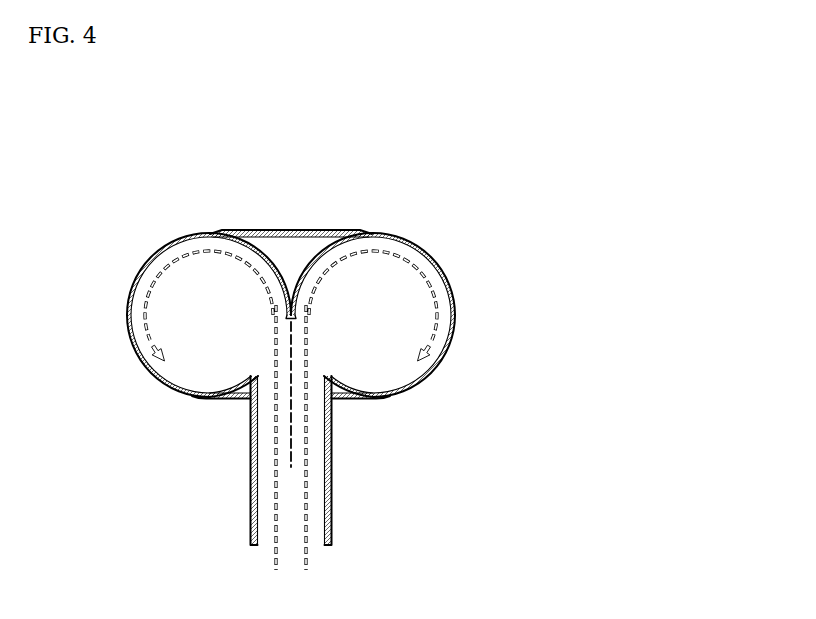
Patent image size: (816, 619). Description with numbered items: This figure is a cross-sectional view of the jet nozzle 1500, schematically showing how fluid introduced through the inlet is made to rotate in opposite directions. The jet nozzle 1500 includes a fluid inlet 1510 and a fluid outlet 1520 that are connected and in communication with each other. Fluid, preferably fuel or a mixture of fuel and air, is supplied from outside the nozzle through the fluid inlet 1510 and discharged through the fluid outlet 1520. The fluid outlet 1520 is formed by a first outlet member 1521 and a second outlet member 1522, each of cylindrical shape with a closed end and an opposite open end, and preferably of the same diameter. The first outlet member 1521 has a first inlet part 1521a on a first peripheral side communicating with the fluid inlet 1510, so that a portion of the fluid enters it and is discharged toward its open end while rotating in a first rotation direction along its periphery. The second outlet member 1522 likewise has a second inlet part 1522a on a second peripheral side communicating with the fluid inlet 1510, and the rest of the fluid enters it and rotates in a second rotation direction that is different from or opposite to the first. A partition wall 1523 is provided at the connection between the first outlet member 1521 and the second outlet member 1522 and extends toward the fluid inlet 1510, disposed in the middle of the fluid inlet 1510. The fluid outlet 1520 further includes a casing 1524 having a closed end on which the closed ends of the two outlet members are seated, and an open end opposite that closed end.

The jet nozzle 1500 is at (462, 121).
The fluid inlet 1510 is at (332, 510).
The fluid outlet 1520 is at (373, 176).
The first outlet member 1521 is at (262, 250).
The first inlet part 1521a is at (257, 362).
The second outlet member 1522 is at (309, 263).
The second inlet part 1522a is at (325, 362).
The partition wall 1523 is at (292, 330).
The casing 1524 is at (218, 230).